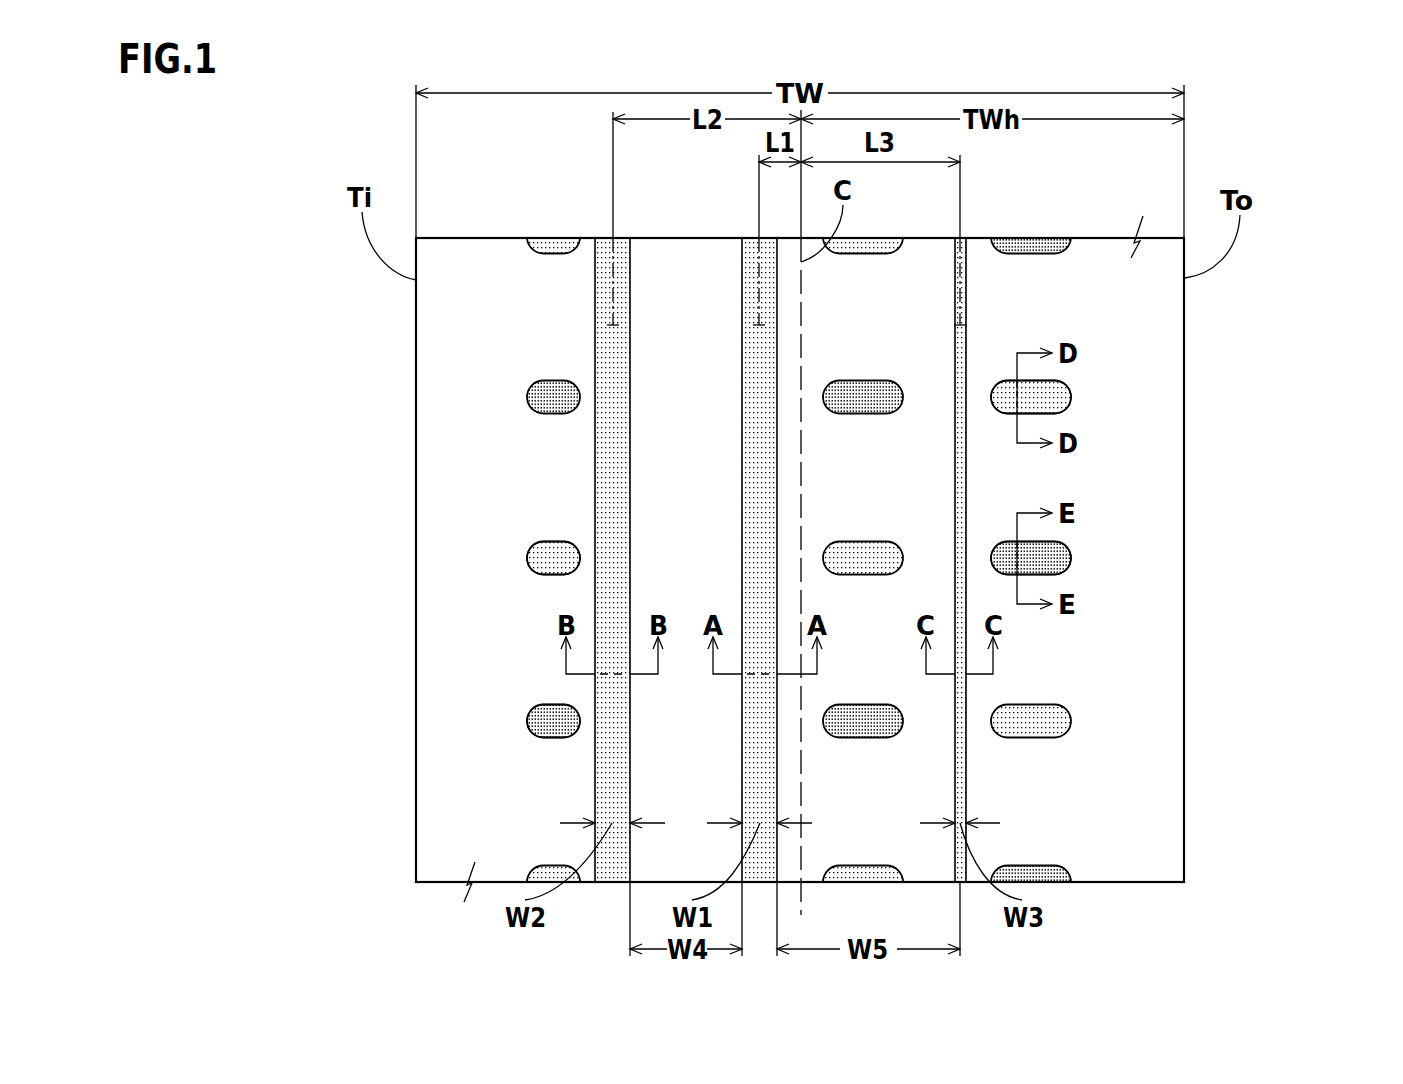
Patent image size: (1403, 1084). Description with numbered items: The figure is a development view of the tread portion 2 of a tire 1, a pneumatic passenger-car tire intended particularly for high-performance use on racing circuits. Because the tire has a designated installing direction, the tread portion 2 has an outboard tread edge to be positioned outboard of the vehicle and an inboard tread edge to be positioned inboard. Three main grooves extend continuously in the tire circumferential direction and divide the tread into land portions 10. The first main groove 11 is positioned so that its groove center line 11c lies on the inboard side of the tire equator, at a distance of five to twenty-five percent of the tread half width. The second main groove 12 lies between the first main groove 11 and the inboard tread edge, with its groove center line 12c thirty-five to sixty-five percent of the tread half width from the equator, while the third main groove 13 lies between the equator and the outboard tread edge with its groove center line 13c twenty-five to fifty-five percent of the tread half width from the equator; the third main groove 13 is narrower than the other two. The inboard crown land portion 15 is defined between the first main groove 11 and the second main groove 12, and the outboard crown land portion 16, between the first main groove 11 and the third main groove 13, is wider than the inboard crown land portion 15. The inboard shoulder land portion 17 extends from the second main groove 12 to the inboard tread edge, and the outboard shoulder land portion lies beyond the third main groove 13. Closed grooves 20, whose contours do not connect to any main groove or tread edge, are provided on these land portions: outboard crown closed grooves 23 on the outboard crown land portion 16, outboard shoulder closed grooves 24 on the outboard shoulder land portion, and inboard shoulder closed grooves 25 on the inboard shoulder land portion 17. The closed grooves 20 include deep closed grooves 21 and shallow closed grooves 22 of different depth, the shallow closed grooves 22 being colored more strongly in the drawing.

The tire 1 is at (500, 182).
The tread portion 2 is at (568, 204).
The land portions 10 is at (1093, 330).
The first main groove 11 is at (762, 497).
The second main groove 12 is at (605, 527).
The third main groove 13 is at (962, 777).
The groove center line 11c is at (757, 255).
The groove center line 12c is at (613, 255).
The groove center line 13c is at (960, 250).
The inboard crown land portion 15 is at (684, 283).
The outboard crown land portion 16 is at (882, 300).
The inboard shoulder land portion 17 is at (478, 305).
The closed grooves 20 is at (868, 724).
The deep closed grooves 21 is at (553, 559).
The shallow closed grooves 22 is at (553, 718).
The outboard crown closed grooves 23 is at (863, 560).
The outboard shoulder closed grooves 24 is at (1031, 560).
The inboard shoulder closed grooves 25 is at (553, 560).